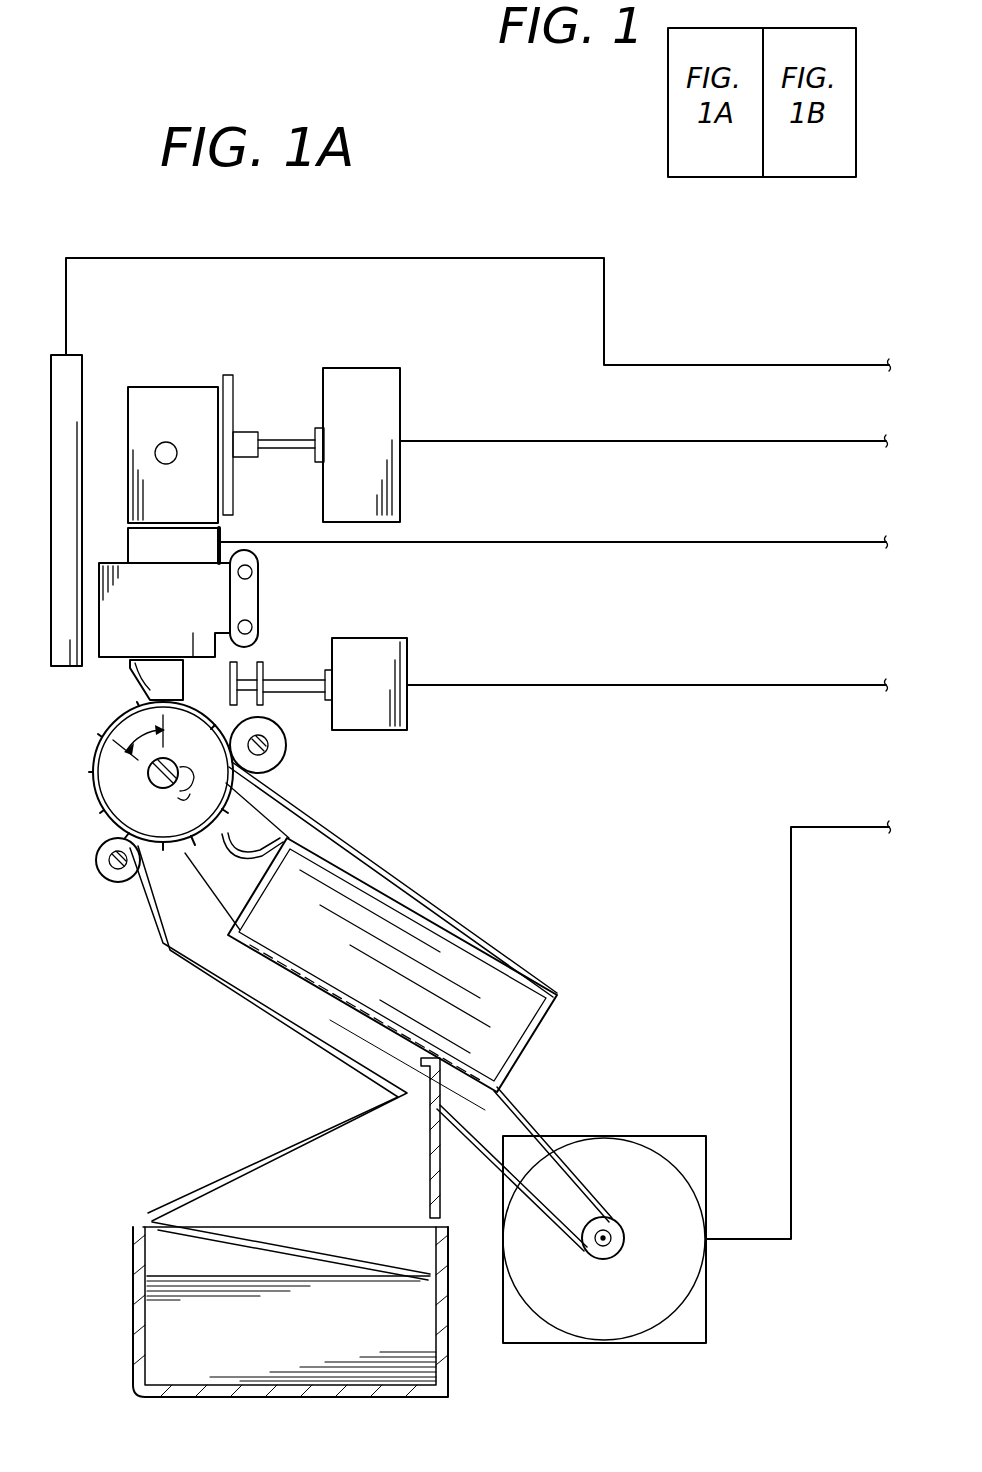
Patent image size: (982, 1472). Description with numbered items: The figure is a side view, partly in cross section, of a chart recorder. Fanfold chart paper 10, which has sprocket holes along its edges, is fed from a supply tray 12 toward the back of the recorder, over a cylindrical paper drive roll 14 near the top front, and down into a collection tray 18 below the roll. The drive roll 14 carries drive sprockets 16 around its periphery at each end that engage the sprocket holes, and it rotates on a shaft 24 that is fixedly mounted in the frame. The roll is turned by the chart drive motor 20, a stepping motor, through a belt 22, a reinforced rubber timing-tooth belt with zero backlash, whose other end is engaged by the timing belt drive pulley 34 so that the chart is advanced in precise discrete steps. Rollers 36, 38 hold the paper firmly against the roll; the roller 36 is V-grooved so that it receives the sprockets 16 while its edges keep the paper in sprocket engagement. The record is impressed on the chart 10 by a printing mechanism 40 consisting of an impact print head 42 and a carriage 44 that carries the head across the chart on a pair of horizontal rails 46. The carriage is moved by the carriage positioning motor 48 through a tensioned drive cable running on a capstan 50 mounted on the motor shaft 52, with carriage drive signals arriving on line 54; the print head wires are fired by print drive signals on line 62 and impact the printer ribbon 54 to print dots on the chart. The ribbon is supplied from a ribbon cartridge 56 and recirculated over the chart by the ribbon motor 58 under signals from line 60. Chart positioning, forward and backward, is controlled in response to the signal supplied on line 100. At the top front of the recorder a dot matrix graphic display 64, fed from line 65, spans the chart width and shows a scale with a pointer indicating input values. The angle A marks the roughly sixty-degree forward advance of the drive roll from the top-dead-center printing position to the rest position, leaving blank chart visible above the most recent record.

The fanfold chart paper 10 is at (382, 875).
The supply tray 12 is at (558, 996).
The paper drive roll 14 is at (112, 793).
The drive sprockets 16 is at (88, 780).
The collection tray 18 is at (133, 1325).
The chart drive motor 20 is at (707, 1310).
The belt 22 is at (522, 1110).
The shaft 24 is at (163, 795).
The timing belt drive pulley 34 is at (628, 1226).
The roller 36 is at (286, 770).
The roller 38 is at (118, 882).
The printing mechanism 40 is at (181, 615).
The print head 42 is at (130, 674).
The carriage 44 is at (258, 628).
The horizontal rails 46 is at (258, 572).
The carriage positioning motor 48 is at (407, 716).
The capstan 50 is at (284, 732).
The shaft 52 is at (312, 645).
The printer ribbon 54 is at (766, 643).
The ribbon cartridge 56 is at (178, 387).
The ribbon motor 58 is at (400, 392).
The line 60 is at (712, 404).
The line 62 is at (716, 503).
The dot matrix graphic display 64 is at (80, 366).
The line 65 is at (337, 258).
The line 100 is at (883, 778).
The angle A is at (95, 743).